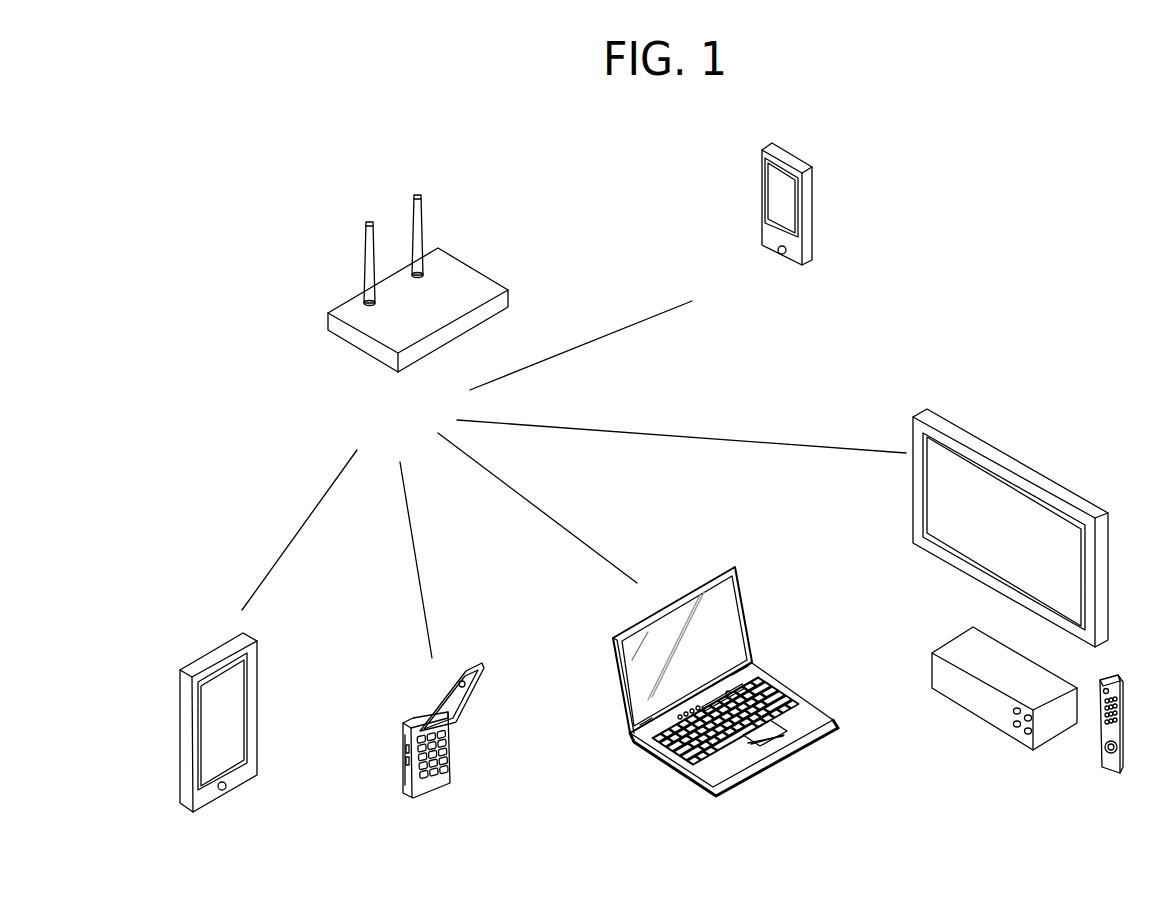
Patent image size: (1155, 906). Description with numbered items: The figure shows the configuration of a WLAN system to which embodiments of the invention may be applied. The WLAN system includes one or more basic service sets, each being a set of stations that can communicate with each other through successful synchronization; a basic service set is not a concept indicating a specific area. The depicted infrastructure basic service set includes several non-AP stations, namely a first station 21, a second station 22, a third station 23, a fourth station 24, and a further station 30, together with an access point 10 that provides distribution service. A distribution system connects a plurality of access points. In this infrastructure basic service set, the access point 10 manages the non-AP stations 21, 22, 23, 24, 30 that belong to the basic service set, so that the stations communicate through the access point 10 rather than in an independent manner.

The access point (AP) 10 is at (418, 322).
The station STA 1 (smartphone) 21 is at (215, 760).
The station STA 2 (mobile phone) 22 is at (439, 775).
The station STA 3 (laptop computer) 23 is at (725, 715).
The station STA 4 (television with set-top box) 24 is at (1018, 617).
The station STAa (smartphone) 30 is at (782, 243).